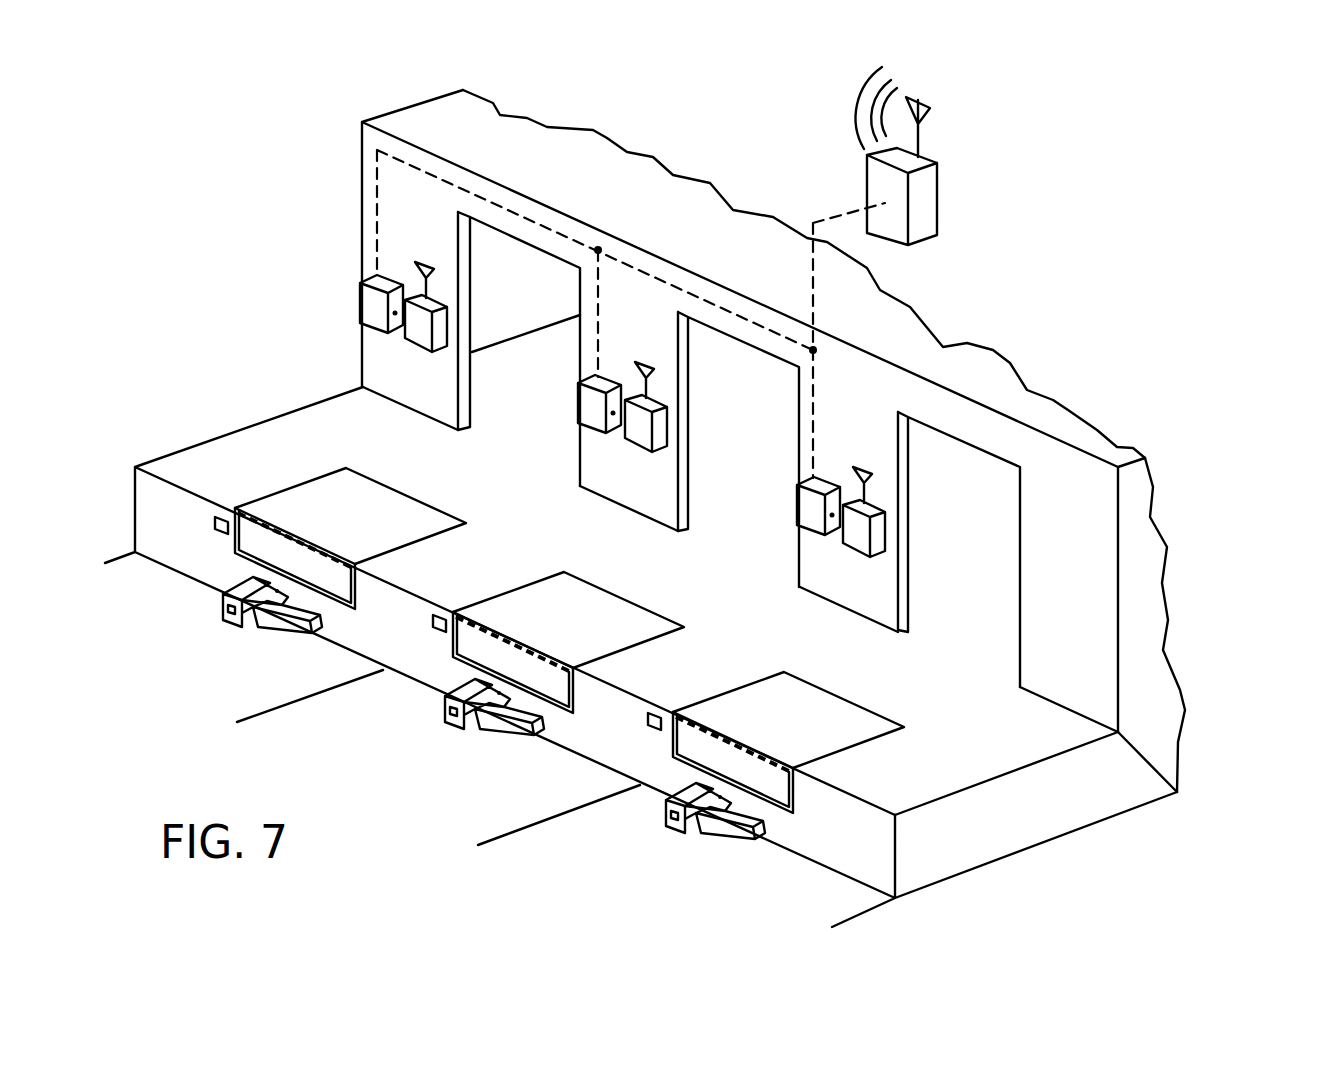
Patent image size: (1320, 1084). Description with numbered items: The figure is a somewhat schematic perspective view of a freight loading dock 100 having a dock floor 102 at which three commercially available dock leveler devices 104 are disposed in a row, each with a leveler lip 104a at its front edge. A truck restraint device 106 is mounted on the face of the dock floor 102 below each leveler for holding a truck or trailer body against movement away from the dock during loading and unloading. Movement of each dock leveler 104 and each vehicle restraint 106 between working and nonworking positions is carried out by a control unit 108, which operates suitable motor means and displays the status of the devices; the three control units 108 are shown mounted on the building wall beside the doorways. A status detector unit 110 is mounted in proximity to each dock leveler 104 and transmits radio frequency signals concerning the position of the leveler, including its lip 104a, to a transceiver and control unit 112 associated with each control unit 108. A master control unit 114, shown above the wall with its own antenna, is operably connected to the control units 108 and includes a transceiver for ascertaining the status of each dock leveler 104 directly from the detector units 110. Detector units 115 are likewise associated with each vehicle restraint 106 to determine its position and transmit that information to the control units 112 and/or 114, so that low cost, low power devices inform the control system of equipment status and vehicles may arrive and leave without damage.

The freight loading dock 100 is at (1132, 433).
The dock floor 102 is at (957, 773).
The dock leveler device 104 is at (412, 488).
The leveler lip 104a is at (298, 562).
The truck restraint device 106 is at (237, 625).
The control unit 108 is at (370, 310).
The status detector unit 110 is at (215, 523).
The transceiver and control unit 112 is at (415, 348).
The master control unit 114 is at (928, 188).
The detector unit 115 is at (222, 615).